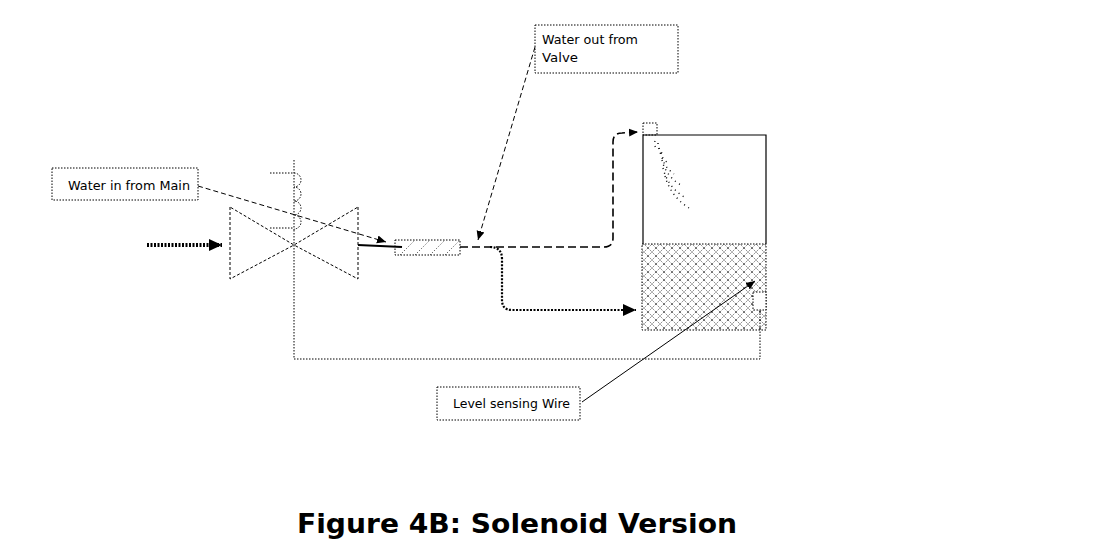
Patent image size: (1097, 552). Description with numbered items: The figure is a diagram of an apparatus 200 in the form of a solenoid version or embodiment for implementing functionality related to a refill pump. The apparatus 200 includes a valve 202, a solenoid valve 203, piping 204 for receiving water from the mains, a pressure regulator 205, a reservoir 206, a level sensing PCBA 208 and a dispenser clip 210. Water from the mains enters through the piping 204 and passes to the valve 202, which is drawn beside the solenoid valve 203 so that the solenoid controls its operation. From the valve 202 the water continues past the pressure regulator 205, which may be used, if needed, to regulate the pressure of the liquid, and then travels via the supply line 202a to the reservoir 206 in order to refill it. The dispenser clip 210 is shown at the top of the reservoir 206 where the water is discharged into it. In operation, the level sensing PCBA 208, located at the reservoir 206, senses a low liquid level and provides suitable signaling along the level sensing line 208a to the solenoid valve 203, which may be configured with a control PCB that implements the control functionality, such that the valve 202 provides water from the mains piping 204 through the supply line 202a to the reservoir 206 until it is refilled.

The apparatus 200 is at (892, 86).
The valve 202 is at (262, 270).
The supply line 202a is at (508, 272).
The solenoid valve 203 is at (291, 158).
The piping 204 is at (170, 250).
The pressure regulator 205 is at (426, 236).
The reservoir 206 is at (770, 227).
The level sensing PCBA 208 is at (770, 297).
The level sensing line 208a is at (705, 364).
The dispenser clip 210 is at (667, 127).